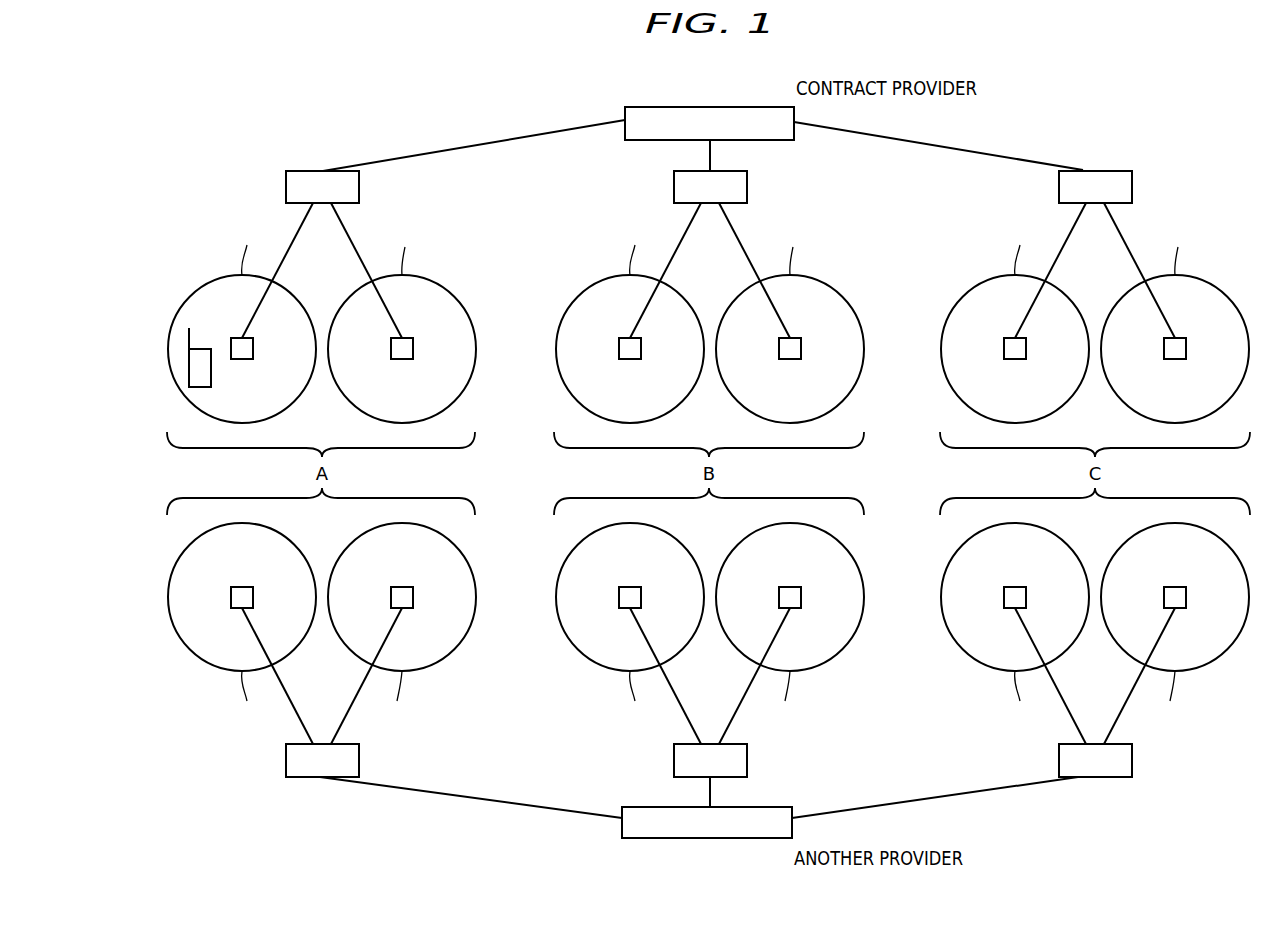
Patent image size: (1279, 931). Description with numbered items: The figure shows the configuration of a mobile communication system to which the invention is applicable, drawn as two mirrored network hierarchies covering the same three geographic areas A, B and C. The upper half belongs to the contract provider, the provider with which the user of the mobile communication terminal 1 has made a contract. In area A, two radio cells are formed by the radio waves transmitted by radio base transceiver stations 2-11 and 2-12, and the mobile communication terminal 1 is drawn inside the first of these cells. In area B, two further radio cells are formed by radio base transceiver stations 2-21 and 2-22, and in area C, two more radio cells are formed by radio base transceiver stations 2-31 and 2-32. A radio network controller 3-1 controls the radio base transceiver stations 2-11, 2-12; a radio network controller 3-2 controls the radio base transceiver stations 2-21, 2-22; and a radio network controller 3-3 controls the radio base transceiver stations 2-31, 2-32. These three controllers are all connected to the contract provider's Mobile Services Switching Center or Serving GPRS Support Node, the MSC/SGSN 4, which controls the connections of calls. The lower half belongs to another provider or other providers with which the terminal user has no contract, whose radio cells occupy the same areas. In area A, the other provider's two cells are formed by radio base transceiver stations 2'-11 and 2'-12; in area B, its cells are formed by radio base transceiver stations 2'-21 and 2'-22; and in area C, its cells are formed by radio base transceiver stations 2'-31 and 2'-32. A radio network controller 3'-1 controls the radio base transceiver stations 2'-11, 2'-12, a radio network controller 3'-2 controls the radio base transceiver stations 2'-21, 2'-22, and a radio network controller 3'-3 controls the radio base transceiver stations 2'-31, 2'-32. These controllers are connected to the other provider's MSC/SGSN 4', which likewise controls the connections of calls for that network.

The mobile communication terminal 1 is at (189, 364).
The radio base transceiver station 2-11 is at (238, 338).
The radio base transceiver station 2-12 is at (407, 338).
The radio base transceiver station 2-21 is at (626, 338).
The radio base transceiver station 2-22 is at (795, 338).
The radio base transceiver station 2-31 is at (1011, 338).
The radio base transceiver station 2-32 is at (1180, 338).
The radio network controller 3-1 is at (359, 187).
The radio network controller 3-2 is at (747, 187).
The radio network controller 3-3 is at (1132, 187).
The MSC/SGSN 4 is at (703, 114).
The radio base transceiver station 2'-11 is at (242, 625).
The radio base transceiver station 2'-12 is at (402, 625).
The radio base transceiver station 2'-21 is at (630, 625).
The radio base transceiver station 2'-22 is at (790, 625).
The radio base transceiver station 2'-31 is at (1015, 625).
The radio base transceiver station 2'-32 is at (1175, 625).
The radio network controller 3'-1 is at (335, 692).
The radio network controller 3'-2 is at (723, 692).
The radio network controller 3'-3 is at (1108, 692).
The MSC/SGSN 4' is at (699, 832).